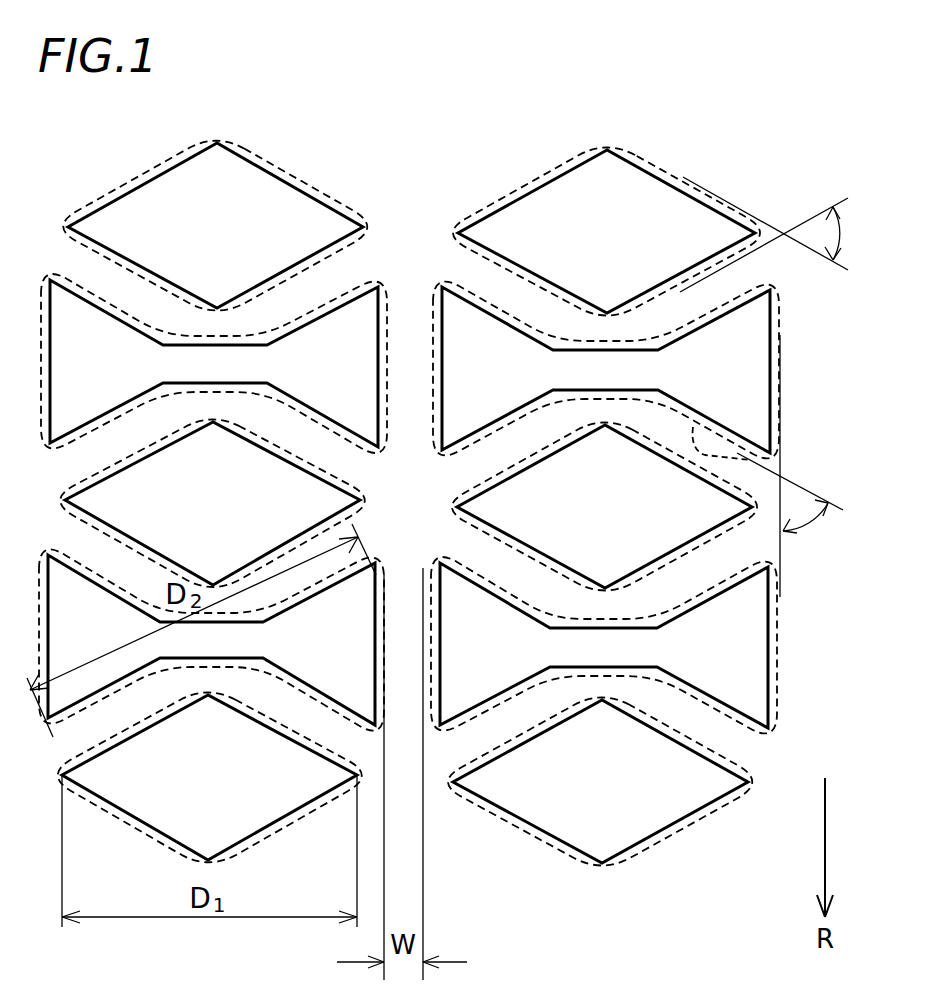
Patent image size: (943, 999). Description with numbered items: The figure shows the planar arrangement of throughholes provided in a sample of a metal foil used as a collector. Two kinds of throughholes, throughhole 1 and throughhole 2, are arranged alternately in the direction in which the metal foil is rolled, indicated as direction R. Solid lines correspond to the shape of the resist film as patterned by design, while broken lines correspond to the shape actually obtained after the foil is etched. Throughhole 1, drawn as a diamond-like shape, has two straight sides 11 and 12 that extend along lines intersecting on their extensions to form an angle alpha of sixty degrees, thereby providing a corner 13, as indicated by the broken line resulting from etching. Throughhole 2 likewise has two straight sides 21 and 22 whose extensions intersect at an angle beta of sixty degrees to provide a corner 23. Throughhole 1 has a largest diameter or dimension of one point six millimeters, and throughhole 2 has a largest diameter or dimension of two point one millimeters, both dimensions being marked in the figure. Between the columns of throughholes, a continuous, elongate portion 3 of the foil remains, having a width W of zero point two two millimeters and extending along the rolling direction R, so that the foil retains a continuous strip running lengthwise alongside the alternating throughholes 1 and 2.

The throughhole 1 is at (282, 198).
The throughhole 2 is at (325, 327).
The continuous, elongate portion 3 is at (412, 330).
The straight side 11 is at (662, 163).
The straight side 12 is at (700, 290).
The corner 13 is at (707, 227).
The straight side 21 is at (782, 338).
The straight side 22 is at (757, 462).
The corner 23 is at (753, 430).